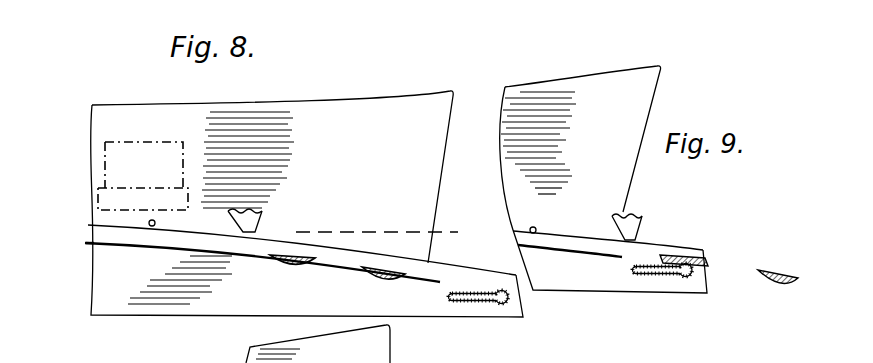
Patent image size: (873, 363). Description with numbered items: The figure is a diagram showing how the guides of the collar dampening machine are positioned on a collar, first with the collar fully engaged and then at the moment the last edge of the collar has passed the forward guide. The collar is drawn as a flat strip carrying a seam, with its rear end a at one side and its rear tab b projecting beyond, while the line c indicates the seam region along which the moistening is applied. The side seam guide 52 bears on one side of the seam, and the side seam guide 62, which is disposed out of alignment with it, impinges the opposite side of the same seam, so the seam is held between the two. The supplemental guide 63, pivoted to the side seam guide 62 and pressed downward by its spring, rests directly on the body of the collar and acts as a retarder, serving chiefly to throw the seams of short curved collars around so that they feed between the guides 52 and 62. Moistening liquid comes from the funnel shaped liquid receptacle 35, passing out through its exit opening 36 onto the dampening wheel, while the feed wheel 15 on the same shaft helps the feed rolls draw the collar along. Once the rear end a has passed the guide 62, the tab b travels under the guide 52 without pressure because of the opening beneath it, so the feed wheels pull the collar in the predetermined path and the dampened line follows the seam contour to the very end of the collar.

In FIG. 8, the feed wheel 15 is at (108, 190).
In FIG. 8, the liquid receptacle 35 is at (152, 227).
In FIG. 9, the liquid receptacle 35 is at (537, 229).
In FIG. 8, the exit opening 36 is at (149, 225).
In FIG. 9, the exit opening 36 is at (530, 229).
In FIG. 8, the side seam guide 52 is at (258, 223).
In FIG. 9, the side seam guide 52 is at (640, 226).
In FIG. 8, the side seam guide 62 is at (300, 268).
In FIG. 9, the side seam guide 62 is at (705, 262).
In FIG. 8, the supplemental guide 63 is at (380, 280).
In FIG. 9, the supplemental guide 63 is at (777, 266).
In FIG. 8, the rear end of the collar a is at (442, 200).
In FIG. 9, the rear end of the collar a is at (652, 125).
In FIG. 8, the rear tab of the collar b is at (509, 319).
In FIG. 9, the rear tab of the collar b is at (662, 291).
In FIG. 8, the fold line c is at (381, 223).